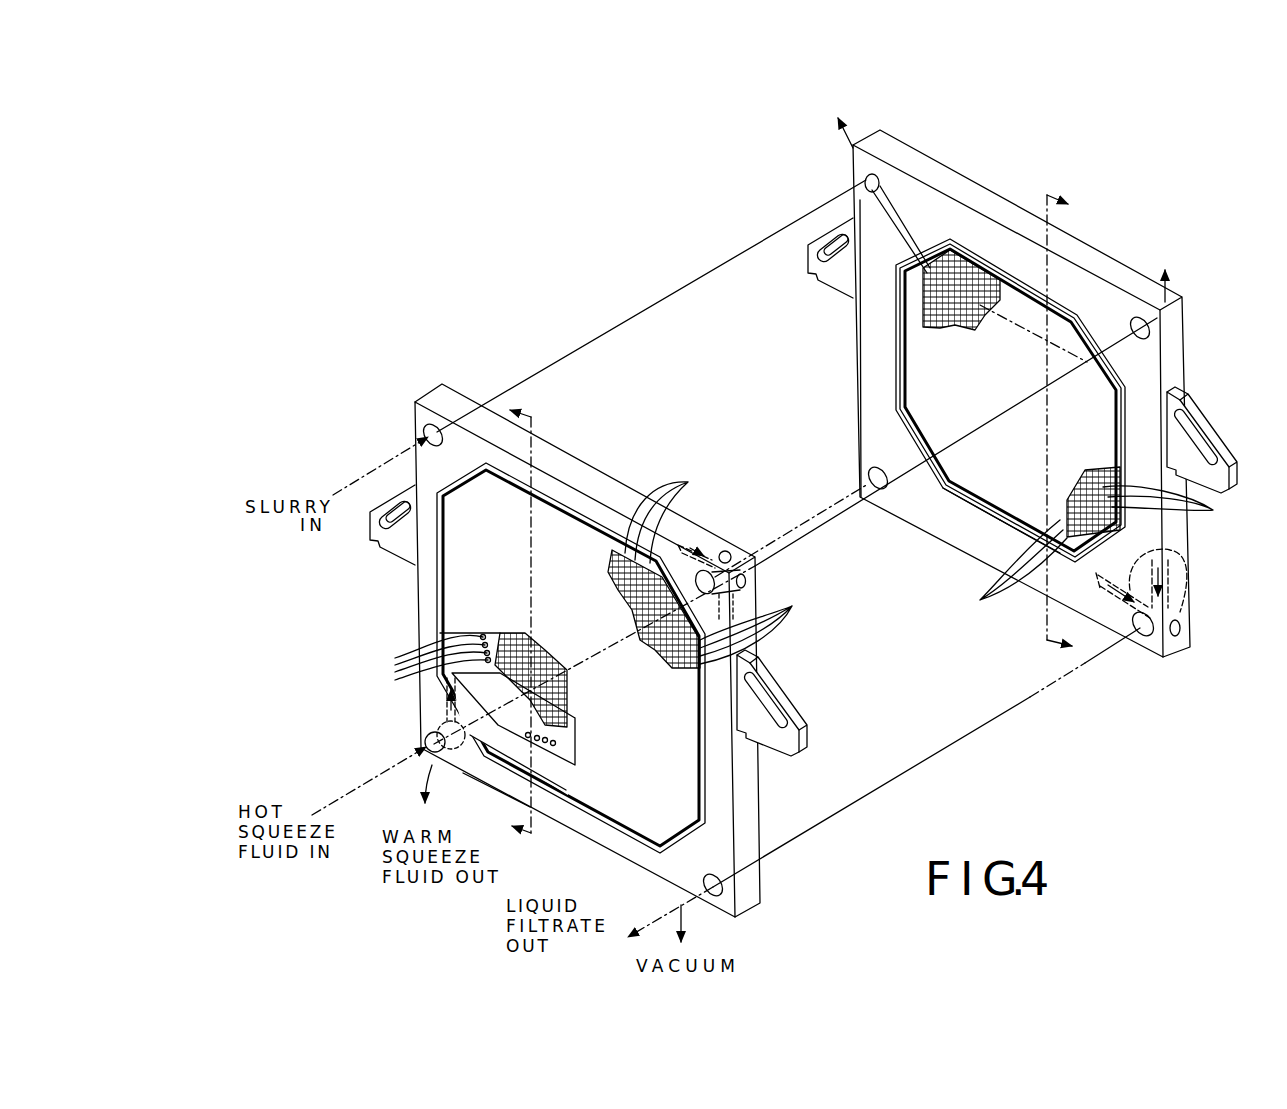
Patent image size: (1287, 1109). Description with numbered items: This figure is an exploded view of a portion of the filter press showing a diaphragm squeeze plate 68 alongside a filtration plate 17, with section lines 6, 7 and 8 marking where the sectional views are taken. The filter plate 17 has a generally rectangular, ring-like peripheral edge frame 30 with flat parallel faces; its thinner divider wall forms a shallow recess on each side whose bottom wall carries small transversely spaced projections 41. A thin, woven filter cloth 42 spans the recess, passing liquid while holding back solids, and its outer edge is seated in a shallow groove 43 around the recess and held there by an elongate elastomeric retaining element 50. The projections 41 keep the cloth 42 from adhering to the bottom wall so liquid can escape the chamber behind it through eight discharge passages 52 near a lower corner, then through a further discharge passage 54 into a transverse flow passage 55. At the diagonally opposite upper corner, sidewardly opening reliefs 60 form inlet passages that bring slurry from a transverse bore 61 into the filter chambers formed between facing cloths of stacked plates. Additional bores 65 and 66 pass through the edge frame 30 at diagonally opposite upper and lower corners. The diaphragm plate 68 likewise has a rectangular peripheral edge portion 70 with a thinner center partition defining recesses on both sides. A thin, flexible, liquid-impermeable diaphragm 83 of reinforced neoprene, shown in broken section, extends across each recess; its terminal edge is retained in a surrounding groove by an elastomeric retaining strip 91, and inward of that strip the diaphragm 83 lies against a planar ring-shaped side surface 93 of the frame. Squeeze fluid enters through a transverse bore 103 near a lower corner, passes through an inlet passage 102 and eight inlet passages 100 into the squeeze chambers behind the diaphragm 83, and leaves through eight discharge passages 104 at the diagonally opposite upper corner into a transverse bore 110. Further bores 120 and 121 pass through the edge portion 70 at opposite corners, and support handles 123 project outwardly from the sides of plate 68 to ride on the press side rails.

The section line 6- 6 is at (532, 628).
The section line 7- 7 is at (1055, 415).
The section line 8- 8 is at (1002, 207).
The filter plate 17 is at (982, 380).
The peripheral edge frame 30 is at (870, 337).
The projections 41 is at (975, 270).
The filter cloth 42 is at (980, 495).
The shallow groove 43 is at (896, 305).
The elastomeric retaining element 50 is at (945, 493).
The discharge passages 52 is at (1099, 544).
The discharge passage 54 is at (1180, 566).
The flow passage 55 is at (1148, 636).
The reliefs 60 is at (858, 268).
The flow passage 61 is at (862, 200).
The flow passage 65 is at (1140, 318).
The flow passage 66 is at (878, 474).
The diaphragm plate 68 is at (547, 602).
The peripheral edge portion 70 is at (425, 592).
The diaphragm 83 is at (677, 742).
The retaining strip 91 is at (705, 802).
The ring-shaped side surface 93 is at (560, 790).
The inlet passages 100 is at (460, 655).
The inlet passage 102 is at (440, 703).
The flow passage 103 is at (426, 741).
The discharge passages 104 is at (720, 561).
The flow passage 110 is at (757, 587).
The flow passage 120 is at (428, 430).
The flow passage 121 is at (728, 887).
The support handles 123 is at (790, 715).